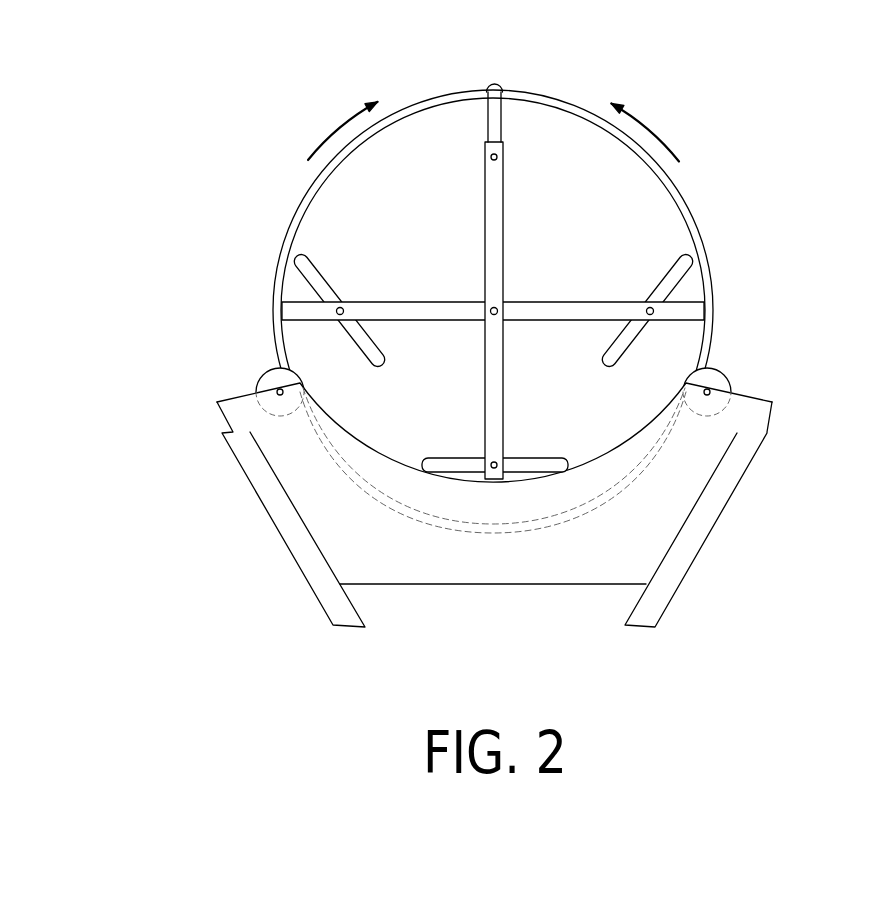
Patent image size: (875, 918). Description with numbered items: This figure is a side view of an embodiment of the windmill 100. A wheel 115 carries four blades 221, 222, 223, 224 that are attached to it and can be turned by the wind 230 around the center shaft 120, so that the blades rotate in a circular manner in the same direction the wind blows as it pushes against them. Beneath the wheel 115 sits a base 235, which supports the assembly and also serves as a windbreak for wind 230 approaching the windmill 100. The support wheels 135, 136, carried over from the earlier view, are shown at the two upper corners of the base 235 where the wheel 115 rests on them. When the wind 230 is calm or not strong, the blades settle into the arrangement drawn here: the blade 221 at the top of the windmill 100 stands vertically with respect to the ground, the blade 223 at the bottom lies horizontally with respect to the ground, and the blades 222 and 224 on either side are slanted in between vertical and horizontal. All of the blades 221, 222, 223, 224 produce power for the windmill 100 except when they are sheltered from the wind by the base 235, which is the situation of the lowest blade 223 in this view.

The windmill 100 is at (167, 145).
The wheel 115 is at (735, 285).
The center shaft 120 is at (490, 309).
The support wheel 135 is at (270, 390).
The support wheel 136 is at (722, 395).
The blade 221 is at (488, 120).
The blade 222 is at (668, 278).
The blade 223 is at (455, 458).
The blade 224 is at (318, 268).
The wind 230 is at (668, 84).
The base 235 is at (645, 520).